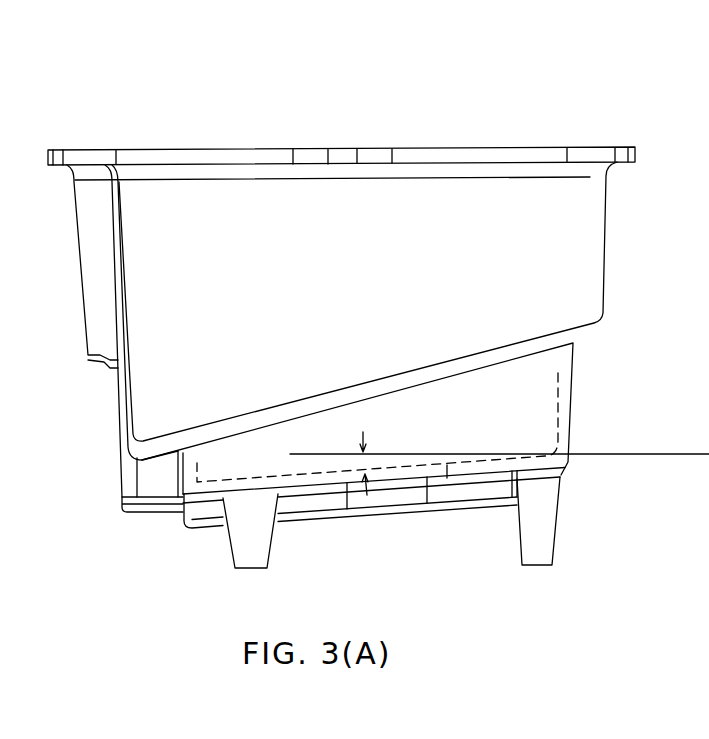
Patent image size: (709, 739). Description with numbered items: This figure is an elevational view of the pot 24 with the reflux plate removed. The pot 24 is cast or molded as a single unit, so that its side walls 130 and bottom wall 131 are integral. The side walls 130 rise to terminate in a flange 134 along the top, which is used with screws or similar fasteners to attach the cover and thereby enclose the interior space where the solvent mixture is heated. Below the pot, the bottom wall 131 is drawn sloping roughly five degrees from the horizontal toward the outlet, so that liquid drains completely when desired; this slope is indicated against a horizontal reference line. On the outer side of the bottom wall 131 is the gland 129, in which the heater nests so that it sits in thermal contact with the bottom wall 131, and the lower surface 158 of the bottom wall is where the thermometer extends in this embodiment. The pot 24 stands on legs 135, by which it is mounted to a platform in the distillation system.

The pot 24 is at (378, 325).
The side walls 130 is at (242, 243).
The flange 134 is at (539, 155).
The legs 135 is at (238, 548).
The gland 129 is at (320, 505).
The lower surface 158 is at (427, 487).
The bottom wall 131 is at (448, 485).